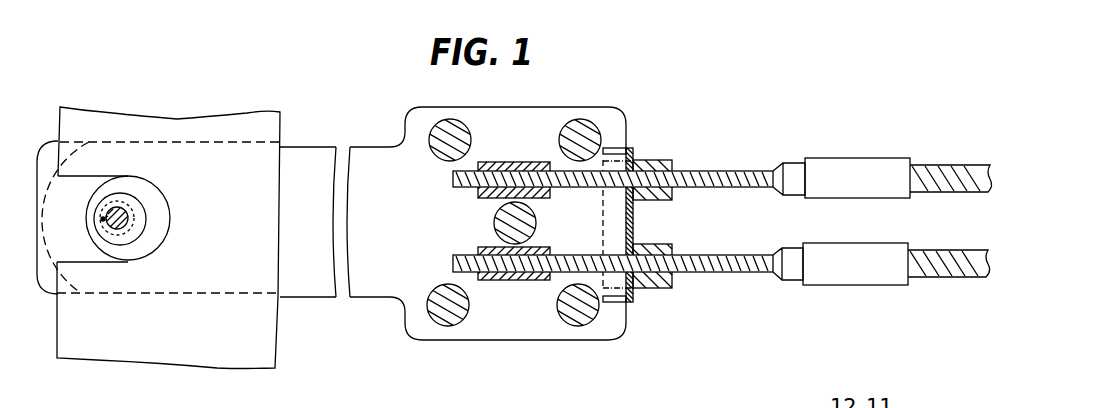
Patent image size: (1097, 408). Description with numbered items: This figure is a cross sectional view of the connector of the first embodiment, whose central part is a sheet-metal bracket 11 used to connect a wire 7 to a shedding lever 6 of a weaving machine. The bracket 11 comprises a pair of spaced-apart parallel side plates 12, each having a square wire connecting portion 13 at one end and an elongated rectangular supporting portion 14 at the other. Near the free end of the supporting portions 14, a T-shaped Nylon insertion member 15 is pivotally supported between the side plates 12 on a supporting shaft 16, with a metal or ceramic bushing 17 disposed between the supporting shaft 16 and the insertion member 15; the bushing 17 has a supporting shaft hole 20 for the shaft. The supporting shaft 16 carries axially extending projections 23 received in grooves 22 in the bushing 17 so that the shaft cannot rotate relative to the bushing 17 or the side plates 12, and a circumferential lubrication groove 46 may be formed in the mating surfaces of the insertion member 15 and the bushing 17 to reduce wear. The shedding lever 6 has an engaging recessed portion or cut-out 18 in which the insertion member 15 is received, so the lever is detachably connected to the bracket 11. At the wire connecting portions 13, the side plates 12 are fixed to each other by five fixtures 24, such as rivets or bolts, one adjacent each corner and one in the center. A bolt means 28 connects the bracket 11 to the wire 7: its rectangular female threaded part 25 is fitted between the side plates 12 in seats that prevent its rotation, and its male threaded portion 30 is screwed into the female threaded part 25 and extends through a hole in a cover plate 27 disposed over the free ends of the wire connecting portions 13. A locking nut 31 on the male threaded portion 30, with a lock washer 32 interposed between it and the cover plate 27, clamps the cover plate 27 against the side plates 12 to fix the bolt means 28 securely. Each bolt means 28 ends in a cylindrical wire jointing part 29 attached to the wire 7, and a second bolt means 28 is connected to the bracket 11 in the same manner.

The shedding lever 6 is at (182, 357).
The wire 7 is at (960, 265).
The bracket 11 is at (455, 357).
The side plate 12 is at (515, 343).
The wire connecting portion 13 is at (553, 328).
The supporting portion 14 is at (297, 288).
The insertion member 15 is at (153, 196).
The supporting shaft 16 is at (121, 208).
The bushing 17 is at (140, 229).
The engaging recessed portion 18 is at (104, 253).
The supporting shaft hole 20 is at (118, 229).
The groove 22 is at (118, 210).
The projection 23 is at (132, 217).
The fixture 24 is at (582, 153).
The female threaded part 25 is at (483, 247).
The cover plate 27 is at (635, 150).
The bolt means 28 is at (753, 168).
The wire jointing part 29 is at (853, 190).
The male threaded portion 30 is at (730, 190).
The locking nut 31 is at (658, 243).
The lock washer 32 is at (641, 212).
The lubrication groove 46 is at (93, 239).